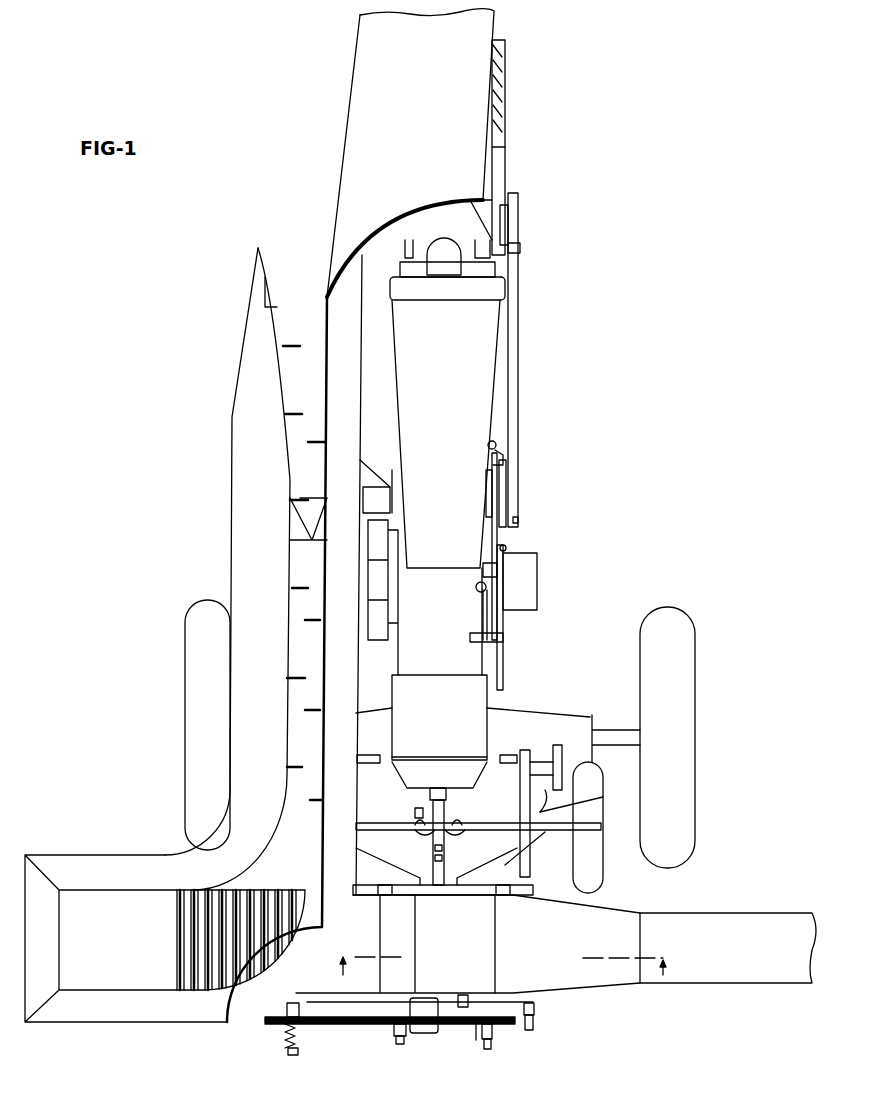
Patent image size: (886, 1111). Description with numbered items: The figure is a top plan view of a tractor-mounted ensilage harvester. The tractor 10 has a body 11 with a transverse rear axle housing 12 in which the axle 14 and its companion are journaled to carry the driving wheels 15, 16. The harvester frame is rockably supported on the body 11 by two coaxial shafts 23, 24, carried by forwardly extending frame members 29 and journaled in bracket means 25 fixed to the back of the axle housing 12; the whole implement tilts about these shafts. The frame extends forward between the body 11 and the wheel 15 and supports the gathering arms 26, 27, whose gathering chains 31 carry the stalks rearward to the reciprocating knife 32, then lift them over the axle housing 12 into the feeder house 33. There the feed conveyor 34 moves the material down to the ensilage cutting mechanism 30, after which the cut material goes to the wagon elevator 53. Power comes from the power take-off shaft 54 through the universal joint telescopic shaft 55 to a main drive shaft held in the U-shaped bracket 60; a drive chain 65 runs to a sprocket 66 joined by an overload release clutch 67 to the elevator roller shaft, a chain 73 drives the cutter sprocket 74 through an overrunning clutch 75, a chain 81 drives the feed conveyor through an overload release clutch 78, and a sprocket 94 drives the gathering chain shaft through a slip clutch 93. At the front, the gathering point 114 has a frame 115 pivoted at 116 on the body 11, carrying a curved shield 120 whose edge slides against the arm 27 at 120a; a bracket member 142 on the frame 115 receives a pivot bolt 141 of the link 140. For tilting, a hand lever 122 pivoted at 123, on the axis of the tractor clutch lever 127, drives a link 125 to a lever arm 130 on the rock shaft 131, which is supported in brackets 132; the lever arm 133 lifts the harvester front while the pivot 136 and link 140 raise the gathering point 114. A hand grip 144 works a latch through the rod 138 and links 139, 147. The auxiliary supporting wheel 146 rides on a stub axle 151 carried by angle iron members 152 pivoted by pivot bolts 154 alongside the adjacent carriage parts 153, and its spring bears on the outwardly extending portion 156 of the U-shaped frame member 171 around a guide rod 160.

The tractor 10 is at (500, 363).
The body 11 is at (475, 708).
The rear axle housing 12 is at (502, 735).
The axle 14 is at (630, 730).
The driving wheel 15 is at (200, 675).
The driving wheel 16 is at (675, 765).
The shaft 23 is at (362, 763).
The shaft 24 is at (512, 763).
The bracket means 25 is at (503, 757).
The gathering arm 26 is at (248, 480).
The gathering arm 27 is at (350, 420).
The frame member 29 is at (558, 765).
The ensilage cutting mechanism 30 is at (445, 1045).
The gathering chains 31 is at (325, 348).
The reciprocating knife 32 is at (290, 540).
The feeder house 33 is at (222, 1028).
The feed conveyor 34 is at (185, 933).
The wagon elevator 53 is at (722, 968).
The power take-off shaft 54 is at (460, 805).
The universal joint telescopic shaft 55 is at (443, 885).
The U-shaped bracket 60 is at (438, 1033).
The drive chain 65 is at (458, 998).
The sprocket 66 is at (535, 1010).
The overload release clutch 67 is at (533, 1028).
The chain 73 is at (484, 1040).
The sprocket 74 is at (492, 1045).
The overrunning clutch 75 is at (480, 1042).
The overload release clutch 78 is at (400, 1044).
The chain 81 is at (355, 1024).
The slip clutch 93 is at (300, 1043).
The sprocket 94 is at (287, 1025).
The gathering point 114 is at (345, 100).
The frame 115 is at (515, 115).
The pivot 116 is at (474, 240).
The curved shield 120 is at (427, 104).
The sliding contact 120a is at (348, 255).
The hand lever 122 is at (503, 600).
The pivot 123 is at (503, 640).
The link 125 is at (492, 530).
The tractor clutch lever 127 is at (478, 600).
The lever arm 130 is at (506, 478).
The rock shaft 131 is at (486, 500).
The brackets 132 is at (392, 495).
The lever arm 133 is at (370, 478).
The pivot 136 is at (518, 520).
The rod 138 is at (503, 455).
The link 139 is at (483, 568).
The link 140 is at (518, 400).
The pivot bolt 141 is at (520, 250).
The bracket member 142 is at (510, 228).
The hand grip 144 is at (506, 545).
The auxiliary supporting wheel 146 is at (590, 885).
The link 147 is at (488, 444).
The stub axle 151 is at (590, 826).
The angle iron member 152 is at (388, 895).
The bracket 153 is at (438, 834).
The pivot bolt 154 is at (457, 878).
The laterally outwardly extending portion 156 is at (590, 798).
The guide rod 160 is at (540, 854).
The U-shaped frame member 171 is at (412, 815).